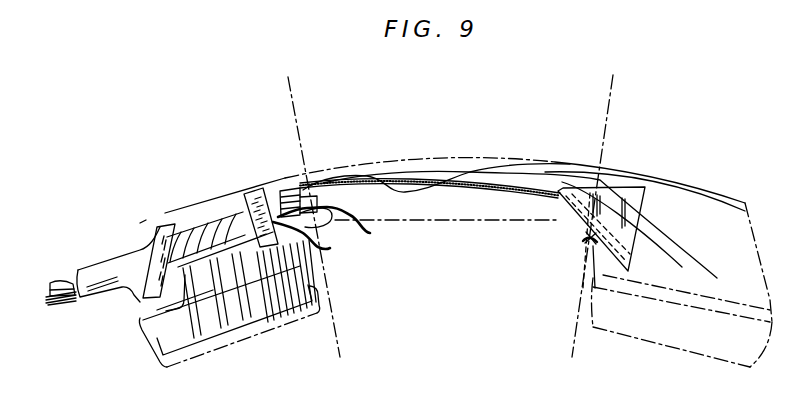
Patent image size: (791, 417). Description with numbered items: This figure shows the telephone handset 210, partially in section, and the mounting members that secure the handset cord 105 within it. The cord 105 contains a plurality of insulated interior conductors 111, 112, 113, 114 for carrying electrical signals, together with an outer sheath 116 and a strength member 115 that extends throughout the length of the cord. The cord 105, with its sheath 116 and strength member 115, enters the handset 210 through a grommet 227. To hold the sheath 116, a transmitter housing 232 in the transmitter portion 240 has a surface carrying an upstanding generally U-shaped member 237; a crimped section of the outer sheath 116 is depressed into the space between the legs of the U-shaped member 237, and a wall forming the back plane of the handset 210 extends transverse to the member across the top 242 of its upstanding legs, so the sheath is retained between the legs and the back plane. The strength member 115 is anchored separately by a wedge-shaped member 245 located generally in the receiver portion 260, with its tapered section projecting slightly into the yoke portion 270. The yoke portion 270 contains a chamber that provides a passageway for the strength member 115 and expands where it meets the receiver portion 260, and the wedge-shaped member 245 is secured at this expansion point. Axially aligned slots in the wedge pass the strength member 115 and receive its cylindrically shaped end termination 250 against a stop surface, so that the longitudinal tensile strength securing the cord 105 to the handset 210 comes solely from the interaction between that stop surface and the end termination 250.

The cord 105 is at (55, 281).
The outer sheath 116 is at (48, 300).
The grommet 227 is at (102, 262).
The transmitter portion 240 is at (226, 118).
The top of upstanding legs 242 is at (247, 193).
The transmitter housing 232 is at (310, 275).
The U-shaped member 237 is at (315, 239).
The insulated interior conductor 111 is at (323, 187).
The insulated interior conductor 112 is at (335, 227).
The strength member 115 is at (530, 198).
The yoke portion 270 is at (450, 122).
The insulated interior conductor 113 is at (677, 244).
The insulated interior conductor 114 is at (684, 264).
The wedge-shaped member 245 is at (653, 181).
The receiver portion 260 is at (705, 125).
The end termination 250 is at (590, 237).
The handset 210 is at (452, 376).